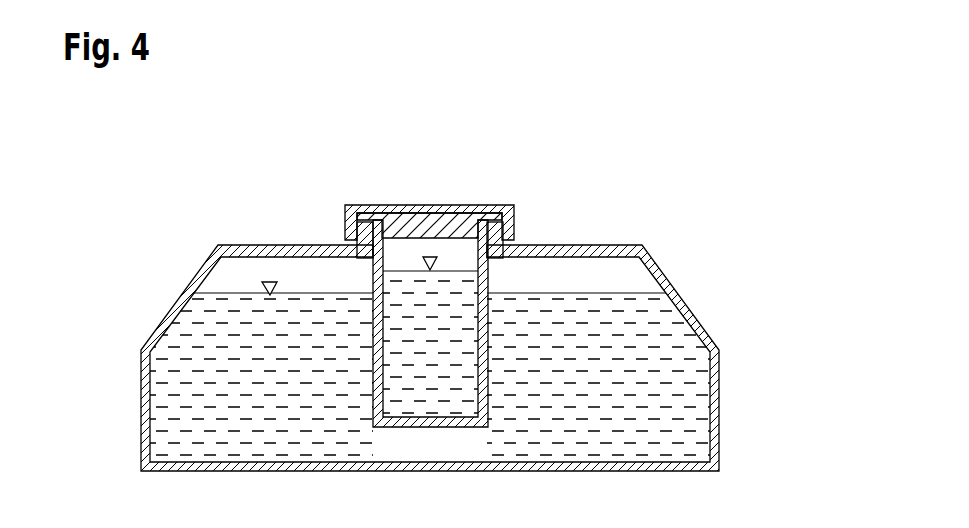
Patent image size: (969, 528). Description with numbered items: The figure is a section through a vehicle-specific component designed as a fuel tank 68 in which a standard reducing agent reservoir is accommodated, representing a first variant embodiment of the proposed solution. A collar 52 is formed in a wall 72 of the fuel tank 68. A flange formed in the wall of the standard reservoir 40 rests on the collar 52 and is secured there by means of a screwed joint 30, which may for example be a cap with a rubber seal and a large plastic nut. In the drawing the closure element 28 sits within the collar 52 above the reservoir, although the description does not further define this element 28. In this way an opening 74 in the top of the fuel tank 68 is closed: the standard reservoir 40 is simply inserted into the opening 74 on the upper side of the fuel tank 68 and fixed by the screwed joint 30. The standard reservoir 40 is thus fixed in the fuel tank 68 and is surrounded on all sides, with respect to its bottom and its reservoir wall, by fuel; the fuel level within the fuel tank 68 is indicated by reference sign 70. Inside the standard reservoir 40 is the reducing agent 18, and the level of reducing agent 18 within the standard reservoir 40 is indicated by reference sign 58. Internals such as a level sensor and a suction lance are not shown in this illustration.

The reducing agent 18 is at (461, 287).
The plug 28 is at (399, 213).
The screwed joint 30 is at (347, 212).
The standard reservoir 40 is at (489, 292).
The collar 52 is at (359, 213).
The level of reducing agent 58 is at (430, 257).
The fuel tank 68 is at (184, 289).
The fuel level 70 is at (266, 282).
The wall 72 is at (142, 406).
The opening 74 is at (512, 233).